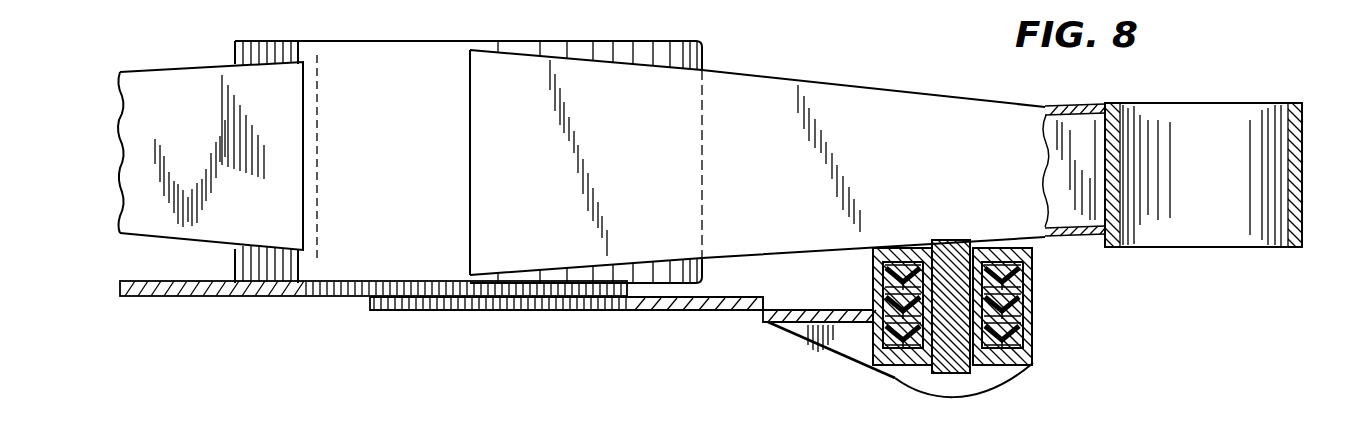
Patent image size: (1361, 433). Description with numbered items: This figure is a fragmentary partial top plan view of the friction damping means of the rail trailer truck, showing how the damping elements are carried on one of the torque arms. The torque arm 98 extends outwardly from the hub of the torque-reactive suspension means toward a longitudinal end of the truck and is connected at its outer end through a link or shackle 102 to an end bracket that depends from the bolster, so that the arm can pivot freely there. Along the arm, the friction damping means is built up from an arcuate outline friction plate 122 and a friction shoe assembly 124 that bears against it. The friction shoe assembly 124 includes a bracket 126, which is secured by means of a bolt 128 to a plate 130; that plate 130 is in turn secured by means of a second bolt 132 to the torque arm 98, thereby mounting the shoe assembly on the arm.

The torque arm 98 is at (946, 184).
The shackle 102 is at (1302, 240).
The arcuate outline friction plate 122 is at (970, 373).
The friction shoe assembly 124 is at (1035, 350).
The bracket 126 is at (1033, 289).
The bolt 128 is at (813, 352).
The plate 130 is at (682, 317).
The bolt 132 is at (542, 342).